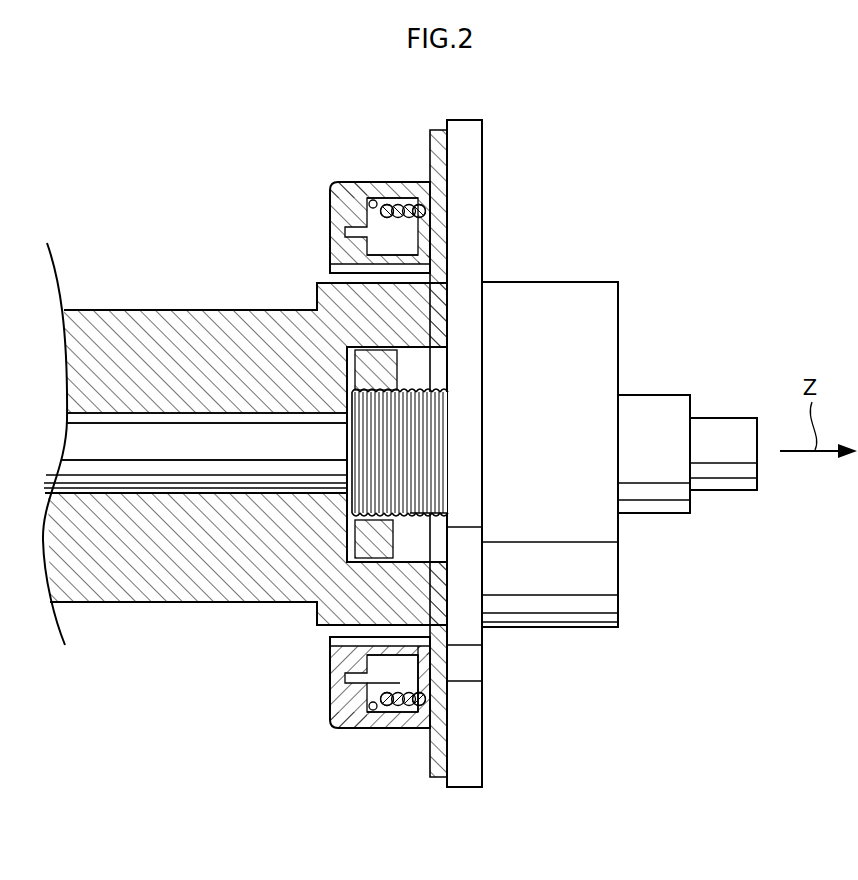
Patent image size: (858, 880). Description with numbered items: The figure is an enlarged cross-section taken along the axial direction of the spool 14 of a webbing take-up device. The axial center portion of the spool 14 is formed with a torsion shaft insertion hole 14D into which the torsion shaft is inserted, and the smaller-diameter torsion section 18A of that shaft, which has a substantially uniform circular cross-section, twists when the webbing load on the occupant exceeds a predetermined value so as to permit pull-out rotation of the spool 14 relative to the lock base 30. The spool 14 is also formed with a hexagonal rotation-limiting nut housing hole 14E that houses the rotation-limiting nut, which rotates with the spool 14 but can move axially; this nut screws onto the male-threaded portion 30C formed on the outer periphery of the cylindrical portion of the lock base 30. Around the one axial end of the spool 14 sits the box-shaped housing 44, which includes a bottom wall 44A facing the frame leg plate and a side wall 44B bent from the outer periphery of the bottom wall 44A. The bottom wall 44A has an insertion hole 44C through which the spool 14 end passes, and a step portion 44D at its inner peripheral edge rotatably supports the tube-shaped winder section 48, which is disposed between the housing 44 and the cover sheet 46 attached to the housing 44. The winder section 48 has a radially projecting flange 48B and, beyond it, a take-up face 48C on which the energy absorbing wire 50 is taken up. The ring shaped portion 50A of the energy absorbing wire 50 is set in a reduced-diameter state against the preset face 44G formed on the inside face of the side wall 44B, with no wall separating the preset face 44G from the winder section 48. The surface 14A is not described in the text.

The spool 14 is at (88, 305).
The outer peripheral surface of shaft 14A is at (130, 310).
The torsion shaft insertion hole 14D is at (215, 417).
The rotation-limiting nut housing hole 14E is at (318, 292).
The torsion section 18A is at (92, 448).
The lock base 30 is at (590, 282).
The male-threaded portion 30C is at (410, 518).
The housing 44 is at (346, 178).
The bottom wall 44A is at (330, 215).
The side wall 44B is at (397, 198).
The insertion hole 44C is at (330, 650).
The step portion 44D is at (345, 728).
The preset face 44G is at (432, 735).
The cover sheet 46 is at (452, 120).
The winder section 48 is at (410, 660).
The flange 48B is at (400, 672).
The take-up face 48C is at (403, 252).
The energy absorbing wire 50 is at (385, 205).
The ring shaped portion 50A is at (387, 713).